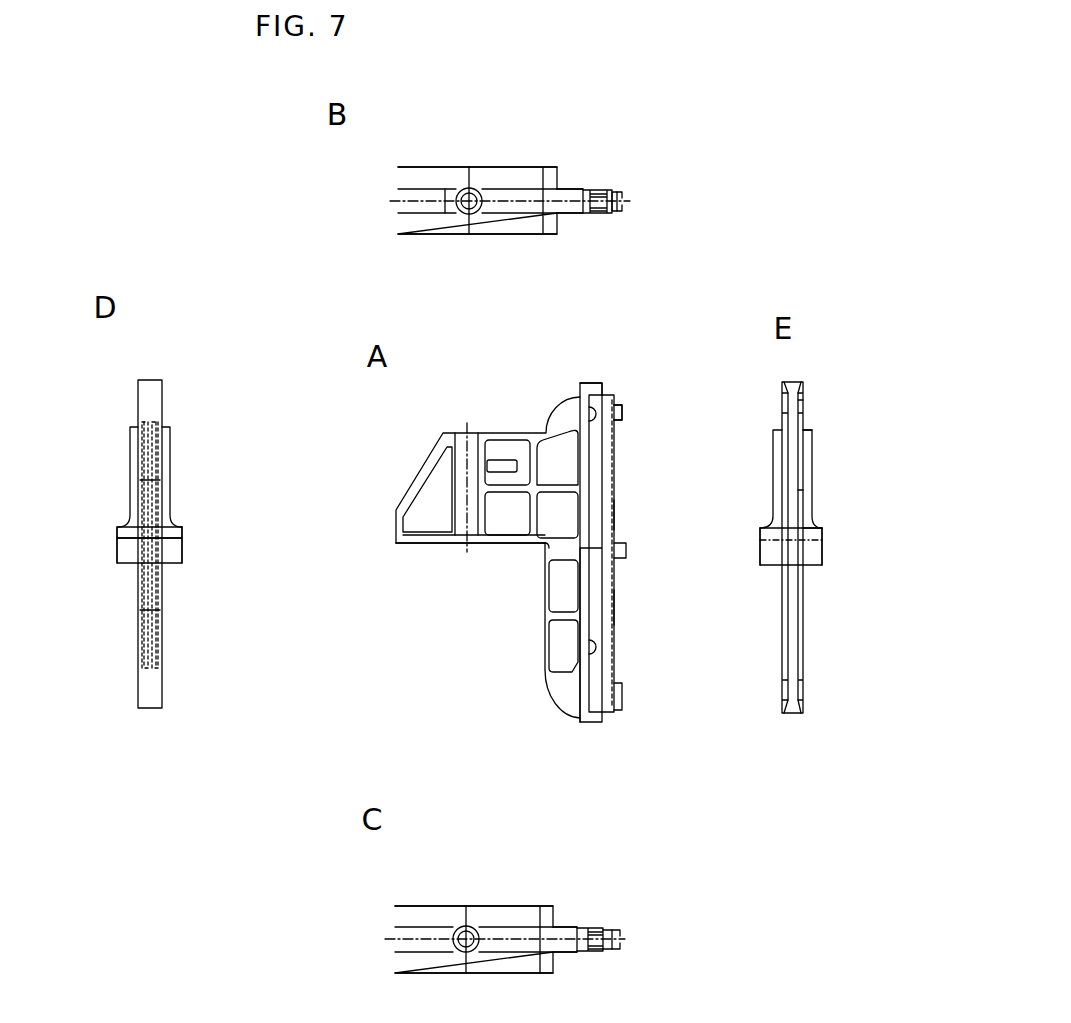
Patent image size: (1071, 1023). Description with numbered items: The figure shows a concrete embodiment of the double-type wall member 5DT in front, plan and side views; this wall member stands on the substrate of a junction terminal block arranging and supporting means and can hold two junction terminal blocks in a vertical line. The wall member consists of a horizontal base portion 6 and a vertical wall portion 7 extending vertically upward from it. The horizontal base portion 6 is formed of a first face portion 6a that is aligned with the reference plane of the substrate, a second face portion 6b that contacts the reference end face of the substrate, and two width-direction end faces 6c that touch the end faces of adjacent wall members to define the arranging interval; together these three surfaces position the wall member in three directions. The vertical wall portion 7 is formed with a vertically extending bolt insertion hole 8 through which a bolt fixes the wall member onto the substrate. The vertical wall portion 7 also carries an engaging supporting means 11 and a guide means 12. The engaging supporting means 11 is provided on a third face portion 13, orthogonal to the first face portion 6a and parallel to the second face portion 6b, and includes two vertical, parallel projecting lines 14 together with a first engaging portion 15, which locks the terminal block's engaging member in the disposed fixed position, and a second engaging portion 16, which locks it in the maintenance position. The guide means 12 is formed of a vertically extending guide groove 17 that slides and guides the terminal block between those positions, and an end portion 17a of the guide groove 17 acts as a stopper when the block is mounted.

The double-type wall member 5DT is at (393, 181).
The horizontal base portion 6 is at (398, 222).
The first face portion 6a is at (407, 546).
The second face portion 6b is at (530, 552).
The width-direction end faces 6c is at (440, 167).
The vertical wall portion 7 is at (525, 213).
The bolt insertion hole 8 is at (473, 213).
The engaging supporting means 11 is at (627, 201).
The guide means 12 is at (598, 186).
The third face portion 13 is at (622, 205).
The projecting lines 14 is at (620, 192).
The first engaging portion 15 is at (626, 547).
The second engaging portion 16 is at (617, 425).
The guide groove 17 is at (599, 213).
The end portion of the guide groove 17a is at (588, 572).